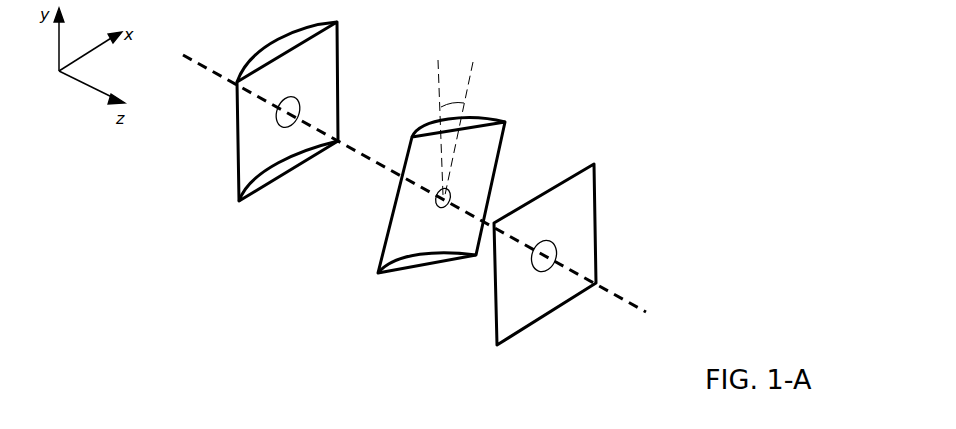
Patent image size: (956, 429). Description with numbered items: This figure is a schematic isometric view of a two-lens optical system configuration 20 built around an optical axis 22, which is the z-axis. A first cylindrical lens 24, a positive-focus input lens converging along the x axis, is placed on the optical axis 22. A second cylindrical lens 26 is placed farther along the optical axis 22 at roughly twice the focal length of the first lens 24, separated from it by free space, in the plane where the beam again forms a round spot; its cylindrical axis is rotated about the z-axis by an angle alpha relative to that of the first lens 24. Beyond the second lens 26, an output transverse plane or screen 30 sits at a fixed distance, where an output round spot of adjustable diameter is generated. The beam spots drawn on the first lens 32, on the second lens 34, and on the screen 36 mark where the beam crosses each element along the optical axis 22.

The two-lens optical system configuration 20 is at (683, 57).
The optical axis 22 is at (613, 288).
The first cylindrical lens 24 is at (340, 56).
The second cylindrical lens 26 is at (503, 151).
The output transverse plane 30 is at (597, 204).
The beam spot on first lens 32 is at (277, 125).
The beam spot on second lens 34 is at (437, 205).
The beam spot on target plane 36 is at (538, 272).